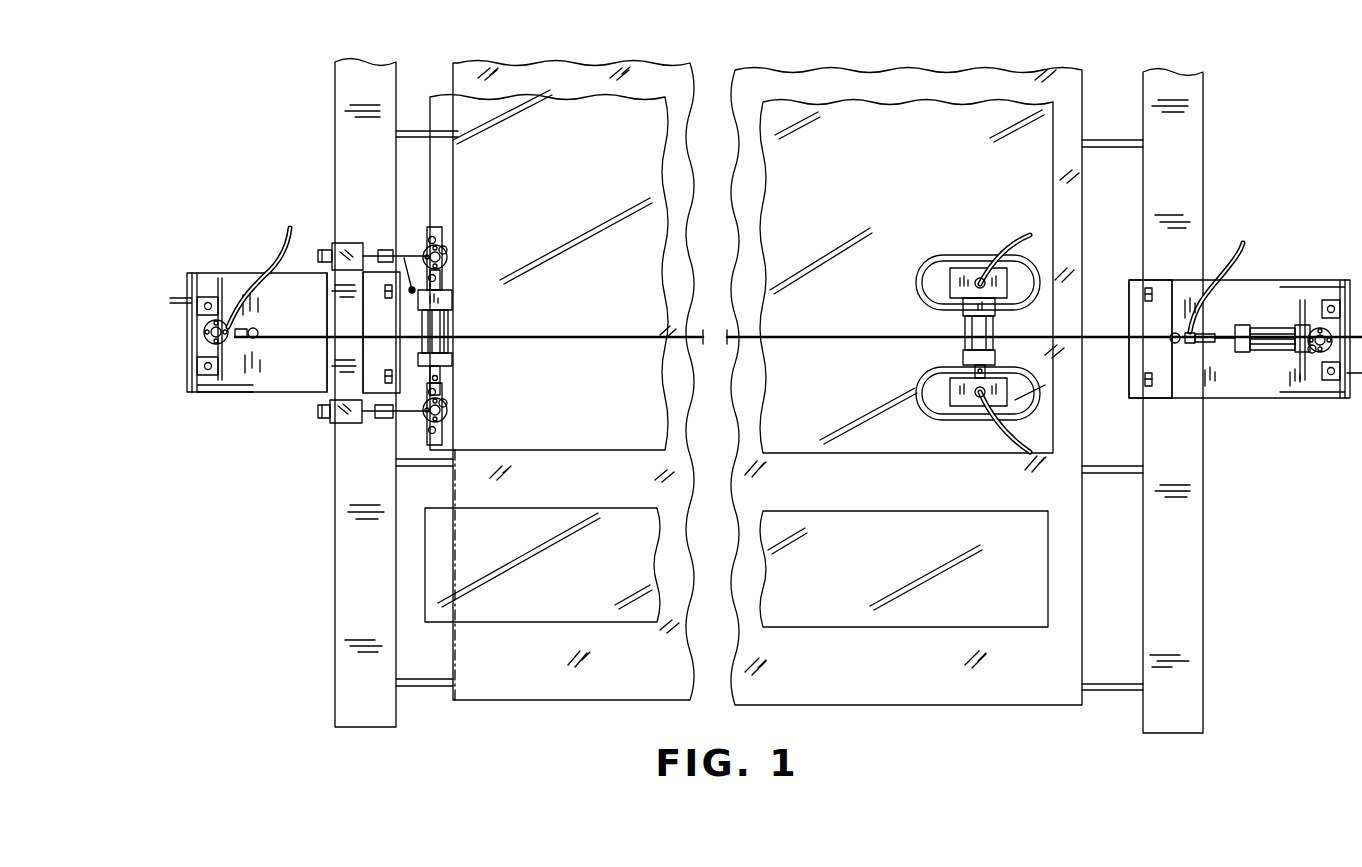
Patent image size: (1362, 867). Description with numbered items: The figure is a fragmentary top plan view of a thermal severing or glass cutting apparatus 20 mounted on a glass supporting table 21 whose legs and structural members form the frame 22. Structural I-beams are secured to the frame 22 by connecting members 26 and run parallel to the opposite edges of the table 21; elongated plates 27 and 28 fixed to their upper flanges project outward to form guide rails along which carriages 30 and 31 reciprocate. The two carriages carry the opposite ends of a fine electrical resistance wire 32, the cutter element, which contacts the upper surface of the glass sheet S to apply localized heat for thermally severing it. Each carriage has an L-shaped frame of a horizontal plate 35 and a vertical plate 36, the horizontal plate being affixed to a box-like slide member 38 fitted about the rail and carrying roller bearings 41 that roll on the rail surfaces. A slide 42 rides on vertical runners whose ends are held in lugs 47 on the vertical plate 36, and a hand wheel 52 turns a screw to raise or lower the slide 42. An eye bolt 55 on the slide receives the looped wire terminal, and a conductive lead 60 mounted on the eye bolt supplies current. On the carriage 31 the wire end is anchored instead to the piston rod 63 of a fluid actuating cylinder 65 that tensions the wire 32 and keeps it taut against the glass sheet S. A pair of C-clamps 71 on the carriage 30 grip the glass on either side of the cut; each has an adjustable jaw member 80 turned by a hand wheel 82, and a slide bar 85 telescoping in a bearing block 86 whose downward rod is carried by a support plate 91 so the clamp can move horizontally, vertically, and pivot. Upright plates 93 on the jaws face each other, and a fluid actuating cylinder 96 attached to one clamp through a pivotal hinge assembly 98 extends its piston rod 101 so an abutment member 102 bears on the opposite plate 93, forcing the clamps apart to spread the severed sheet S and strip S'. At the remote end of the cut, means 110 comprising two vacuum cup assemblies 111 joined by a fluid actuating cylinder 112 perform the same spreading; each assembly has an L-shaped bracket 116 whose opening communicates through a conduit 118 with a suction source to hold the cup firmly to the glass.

The glass cutting apparatus 20 is at (233, 227).
The glass supporting table 21 is at (975, 710).
The frame 22 is at (436, 694).
The connecting members 26 is at (408, 131).
The elongated plate 27 is at (337, 555).
The elongated plate 28 is at (1200, 115).
The carriage 30 is at (270, 397).
The carriage 31 is at (1247, 405).
The wire 32 is at (600, 337).
The horizontal plate 35 is at (295, 385).
The vertical plate 36 is at (186, 275).
The slide member 38 is at (1137, 360).
The roller bearings 41 is at (388, 375).
The slide 42 is at (226, 290).
The lugs 47 is at (201, 297).
The hand wheel 52 is at (210, 342).
The eye bolt 55 is at (258, 330).
The conductive lead 60 is at (280, 232).
The piston rod 63 is at (1222, 330).
The fluid actuating cylinder 65 is at (1270, 350).
The C-clamps 71 is at (452, 228).
The adjustable jaw member 80 is at (432, 240).
The hand wheel 82 is at (448, 261).
The slide bar 85 is at (378, 258).
The bearing block 86 is at (338, 248).
The support plate 91 is at (342, 347).
The upright plate 93 is at (447, 286).
The fluid actuating cylinder 96 is at (450, 330).
The pivotal hinge assembly 98 is at (407, 296).
The piston rod 101 is at (442, 372).
The abutment member 102 is at (440, 380).
The means for urging apart glass portions 110 is at (968, 237).
The vacuum cup assemblies 111 is at (920, 262).
The fluid actuating cylinder 112 is at (972, 338).
The L-shaped bracket 116 is at (945, 392).
The conduit 118 is at (1010, 240).
The glass sheet S is at (715, 155).
The strip S' is at (578, 561).